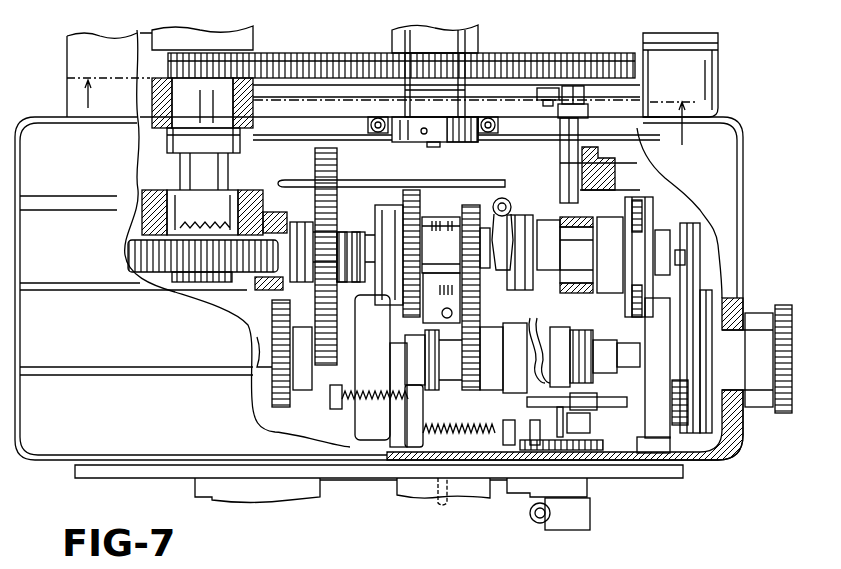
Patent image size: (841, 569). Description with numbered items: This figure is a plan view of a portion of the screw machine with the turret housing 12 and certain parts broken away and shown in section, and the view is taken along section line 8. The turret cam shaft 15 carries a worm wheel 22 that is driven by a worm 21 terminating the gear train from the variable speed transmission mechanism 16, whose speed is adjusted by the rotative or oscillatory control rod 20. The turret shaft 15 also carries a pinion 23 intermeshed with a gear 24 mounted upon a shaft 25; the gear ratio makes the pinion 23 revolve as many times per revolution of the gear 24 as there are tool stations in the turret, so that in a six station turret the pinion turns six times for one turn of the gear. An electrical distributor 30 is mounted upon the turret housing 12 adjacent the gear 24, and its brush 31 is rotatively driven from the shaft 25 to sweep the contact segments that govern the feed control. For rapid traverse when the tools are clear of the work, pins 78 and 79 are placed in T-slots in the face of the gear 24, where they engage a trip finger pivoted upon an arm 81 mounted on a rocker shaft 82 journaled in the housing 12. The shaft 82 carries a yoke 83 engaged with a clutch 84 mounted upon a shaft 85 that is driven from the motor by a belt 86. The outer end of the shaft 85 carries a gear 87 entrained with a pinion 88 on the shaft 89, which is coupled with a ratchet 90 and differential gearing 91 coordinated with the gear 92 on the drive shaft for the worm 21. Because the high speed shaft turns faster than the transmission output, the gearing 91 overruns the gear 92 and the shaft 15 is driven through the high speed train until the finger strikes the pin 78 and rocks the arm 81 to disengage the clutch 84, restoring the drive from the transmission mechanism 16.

The section line 8- 8 is at (381, 112).
The turret housing 12 is at (263, 125).
The turret cam shaft 15 is at (193, 178).
The variable speed transmission mechanism 16 is at (320, 412).
The control rod 20 is at (448, 490).
The worm 21 is at (190, 283).
The worm wheel 22 is at (130, 250).
The pinion 23 is at (167, 67).
The gear 24 is at (383, 53).
The shaft 25 is at (502, 37).
The electrical distributor 30 is at (400, 135).
The brush 31 is at (418, 140).
The pin 78 is at (535, 95).
The pin 79 is at (590, 96).
The arm 81 is at (560, 110).
The rocker shaft 82 is at (590, 190).
The yoke 83 is at (587, 317).
The clutch 84 is at (532, 333).
The shaft 85 is at (622, 385).
The belt 86 is at (782, 413).
The gear 87 is at (470, 333).
The pinion 88 is at (468, 240).
The shaft 89 is at (440, 282).
The ratchet 90 is at (400, 293).
The differential gearing 91 is at (345, 228).
The gear 92 is at (340, 338).